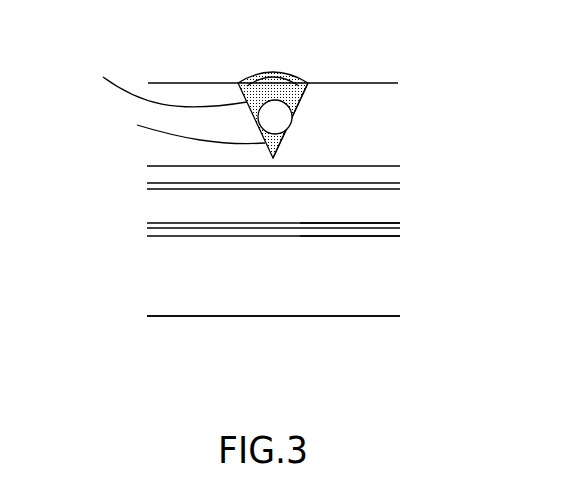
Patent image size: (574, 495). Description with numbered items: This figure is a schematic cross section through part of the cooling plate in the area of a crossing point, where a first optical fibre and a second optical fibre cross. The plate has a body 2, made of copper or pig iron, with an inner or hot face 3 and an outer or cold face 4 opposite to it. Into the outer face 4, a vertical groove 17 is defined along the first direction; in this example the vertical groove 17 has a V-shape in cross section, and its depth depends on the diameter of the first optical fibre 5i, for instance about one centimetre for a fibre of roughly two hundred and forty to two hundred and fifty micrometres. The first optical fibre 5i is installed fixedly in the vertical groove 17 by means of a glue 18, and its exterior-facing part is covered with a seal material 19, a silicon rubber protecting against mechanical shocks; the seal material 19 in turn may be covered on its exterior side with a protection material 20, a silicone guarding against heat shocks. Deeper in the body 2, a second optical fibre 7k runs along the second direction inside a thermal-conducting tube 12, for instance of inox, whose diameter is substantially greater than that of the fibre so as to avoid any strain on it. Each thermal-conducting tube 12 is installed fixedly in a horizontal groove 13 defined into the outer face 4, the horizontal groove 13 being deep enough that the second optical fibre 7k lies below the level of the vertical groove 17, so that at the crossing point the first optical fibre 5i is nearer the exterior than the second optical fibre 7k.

The outer face 4 is at (185, 82).
The protection material 20 is at (267, 72).
The seal material 19 is at (300, 100).
The first optical fibre 5i is at (282, 118).
The vertical groove 17 is at (153, 78).
The glue 18 is at (166, 128).
The thermal-conducting tube 12 is at (177, 183).
The horizontal groove 13 is at (177, 236).
The second optical fibre 7k is at (382, 223).
The inner face 3 is at (213, 317).
The body 2 is at (340, 316).